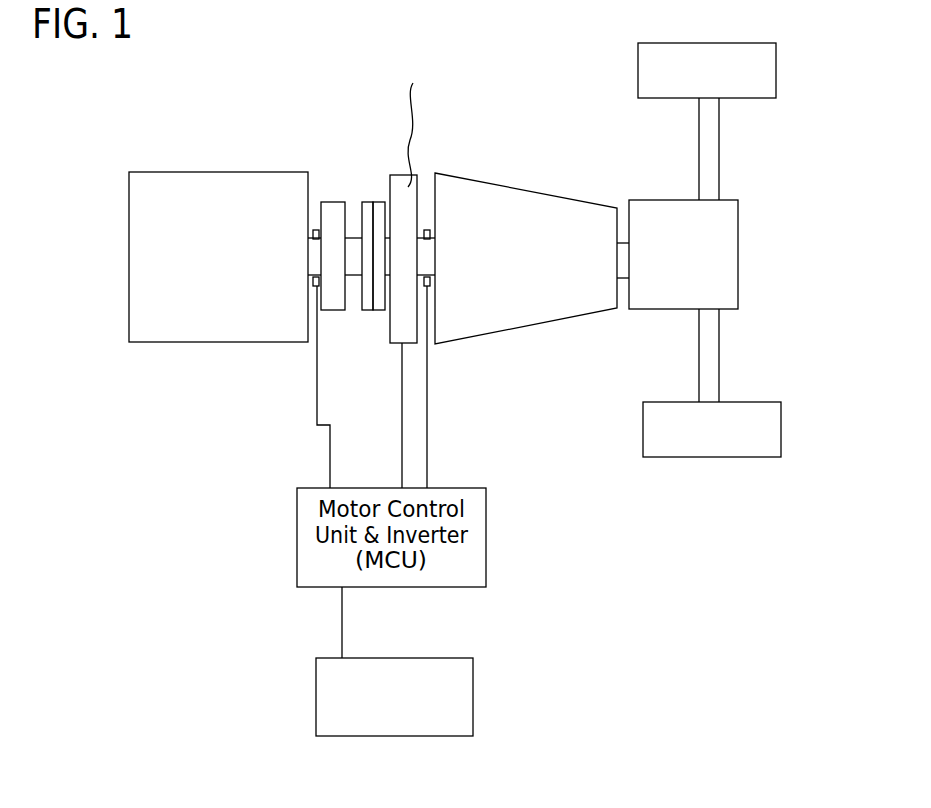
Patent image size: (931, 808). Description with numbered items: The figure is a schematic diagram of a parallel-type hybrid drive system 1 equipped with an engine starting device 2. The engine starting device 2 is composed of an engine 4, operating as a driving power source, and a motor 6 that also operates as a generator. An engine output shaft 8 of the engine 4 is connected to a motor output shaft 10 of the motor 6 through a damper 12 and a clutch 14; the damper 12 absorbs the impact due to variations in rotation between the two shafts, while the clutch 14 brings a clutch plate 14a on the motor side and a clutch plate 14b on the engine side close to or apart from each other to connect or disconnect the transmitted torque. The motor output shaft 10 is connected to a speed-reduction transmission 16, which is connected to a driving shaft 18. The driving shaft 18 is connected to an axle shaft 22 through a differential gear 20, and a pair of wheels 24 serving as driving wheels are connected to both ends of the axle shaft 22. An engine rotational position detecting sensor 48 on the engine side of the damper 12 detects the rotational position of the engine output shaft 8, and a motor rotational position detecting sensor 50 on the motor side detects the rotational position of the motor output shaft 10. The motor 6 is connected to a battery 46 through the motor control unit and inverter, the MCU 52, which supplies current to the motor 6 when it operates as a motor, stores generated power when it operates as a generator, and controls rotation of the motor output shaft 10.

The parallel-type hybrid drive system 1 is at (259, 521).
The engine starting device 2 is at (283, 99).
The engine 4 is at (191, 331).
The motor 6 is at (404, 344).
The engine output shaft 8 is at (313, 247).
The motor output shaft 10 is at (358, 289).
The damper 12 is at (333, 202).
The clutch 14 is at (366, 212).
The clutch plate 14a is at (378, 202).
The clutch plate 14b is at (365, 202).
The speed-reduction transmission 16 is at (470, 190).
The driving shaft 18 is at (628, 246).
The differential gear 20 is at (647, 305).
The axle shaft 22 is at (711, 150).
The wheels 24 is at (668, 92).
The battery 46 is at (458, 697).
The engine rotational position detecting sensor 48 is at (313, 283).
The motor rotational position detecting sensor 50 is at (434, 270).
The MCU 52 is at (382, 588).